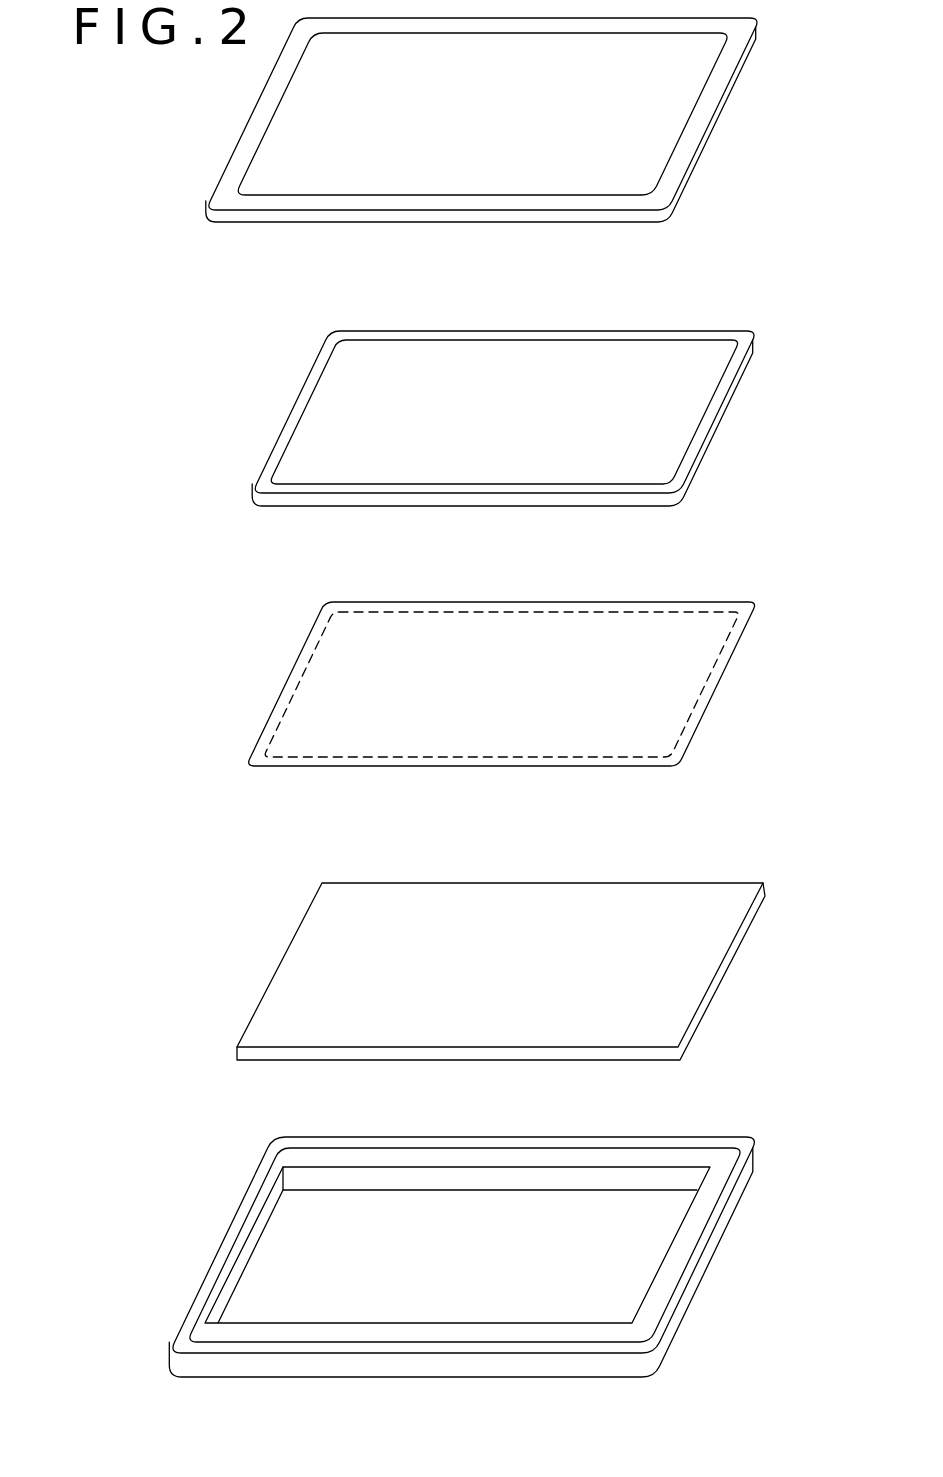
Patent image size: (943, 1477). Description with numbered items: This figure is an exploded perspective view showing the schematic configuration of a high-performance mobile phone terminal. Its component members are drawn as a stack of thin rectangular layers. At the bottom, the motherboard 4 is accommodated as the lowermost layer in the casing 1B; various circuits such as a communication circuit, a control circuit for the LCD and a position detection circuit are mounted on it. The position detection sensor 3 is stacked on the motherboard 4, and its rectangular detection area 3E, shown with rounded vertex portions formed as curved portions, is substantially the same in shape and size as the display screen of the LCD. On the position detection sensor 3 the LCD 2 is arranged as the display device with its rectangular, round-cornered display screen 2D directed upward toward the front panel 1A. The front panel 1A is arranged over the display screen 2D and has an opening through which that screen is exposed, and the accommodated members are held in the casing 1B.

The front panel 1A is at (732, 113).
The casing 1B is at (740, 1207).
The LCD 2 is at (522, 394).
The display screen 2D is at (661, 350).
The position detection sensor 3 is at (526, 658).
The detection area 3E is at (640, 612).
The motherboard 4 is at (740, 945).